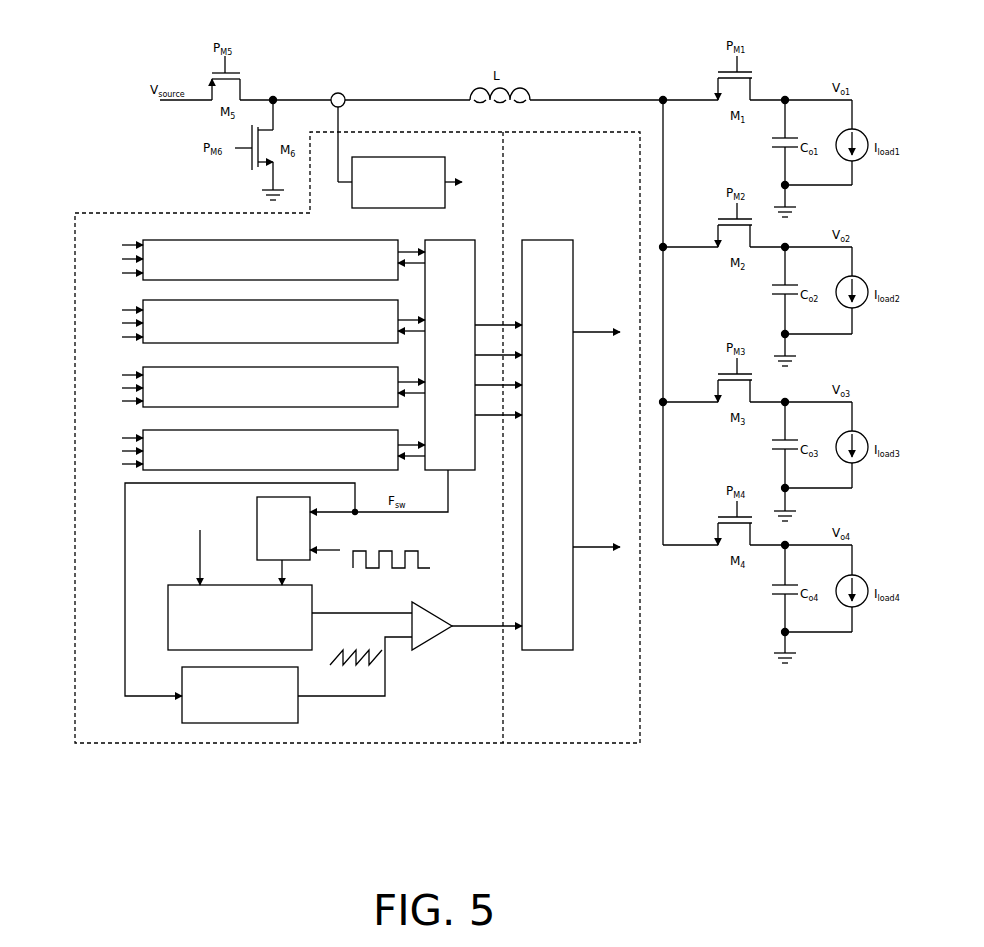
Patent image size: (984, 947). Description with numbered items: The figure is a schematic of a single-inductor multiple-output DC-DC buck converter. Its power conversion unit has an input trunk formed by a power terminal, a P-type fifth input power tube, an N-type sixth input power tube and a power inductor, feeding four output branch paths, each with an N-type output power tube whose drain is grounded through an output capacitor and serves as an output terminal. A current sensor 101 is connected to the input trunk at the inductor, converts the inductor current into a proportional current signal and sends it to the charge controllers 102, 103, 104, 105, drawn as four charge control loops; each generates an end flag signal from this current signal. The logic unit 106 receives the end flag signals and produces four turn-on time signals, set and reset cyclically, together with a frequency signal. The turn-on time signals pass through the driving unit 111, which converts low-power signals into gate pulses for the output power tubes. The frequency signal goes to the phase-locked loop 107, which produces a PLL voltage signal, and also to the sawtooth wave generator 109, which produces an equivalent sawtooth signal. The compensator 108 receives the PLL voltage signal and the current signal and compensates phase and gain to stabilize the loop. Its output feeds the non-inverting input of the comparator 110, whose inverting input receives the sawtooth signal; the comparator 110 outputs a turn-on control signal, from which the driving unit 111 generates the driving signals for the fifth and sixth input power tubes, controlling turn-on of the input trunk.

The current sensor 101 is at (397, 157).
The charge control loop 1 102 is at (163, 240).
The charge control loop 2 103 is at (145, 300).
The charge control loop 3 104 is at (145, 367).
The charge control loop 4 105 is at (145, 430).
The logic unit 106 is at (478, 240).
The phase-locked loop 107 is at (257, 513).
The compensator 108 is at (168, 607).
The sawtooth wave generator 109 is at (240, 723).
The comparator 110 is at (427, 643).
The driving unit 111 is at (547, 650).